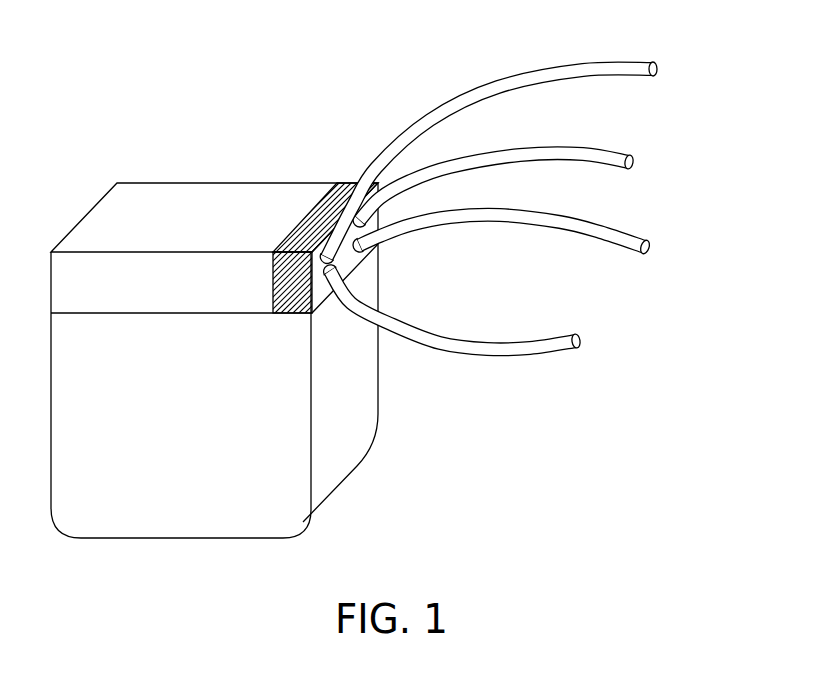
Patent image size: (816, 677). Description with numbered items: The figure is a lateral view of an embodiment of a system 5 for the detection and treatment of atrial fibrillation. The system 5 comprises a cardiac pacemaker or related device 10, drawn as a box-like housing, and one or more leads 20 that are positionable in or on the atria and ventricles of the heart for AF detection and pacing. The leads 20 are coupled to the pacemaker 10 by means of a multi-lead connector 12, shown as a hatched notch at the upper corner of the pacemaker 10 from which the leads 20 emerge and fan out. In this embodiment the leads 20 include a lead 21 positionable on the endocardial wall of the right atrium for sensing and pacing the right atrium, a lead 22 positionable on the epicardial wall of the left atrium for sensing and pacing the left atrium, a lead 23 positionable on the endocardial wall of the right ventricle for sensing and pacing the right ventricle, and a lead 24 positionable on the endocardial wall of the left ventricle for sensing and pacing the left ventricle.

The system 5 is at (106, 108).
The cardiac pacemaker 10 is at (230, 518).
The multi-lead connector 12 is at (310, 213).
The leads 20 is at (583, 63).
The lead 21 is at (658, 69).
The lead 22 is at (634, 162).
The lead 23 is at (651, 246).
The lead 24 is at (582, 340).